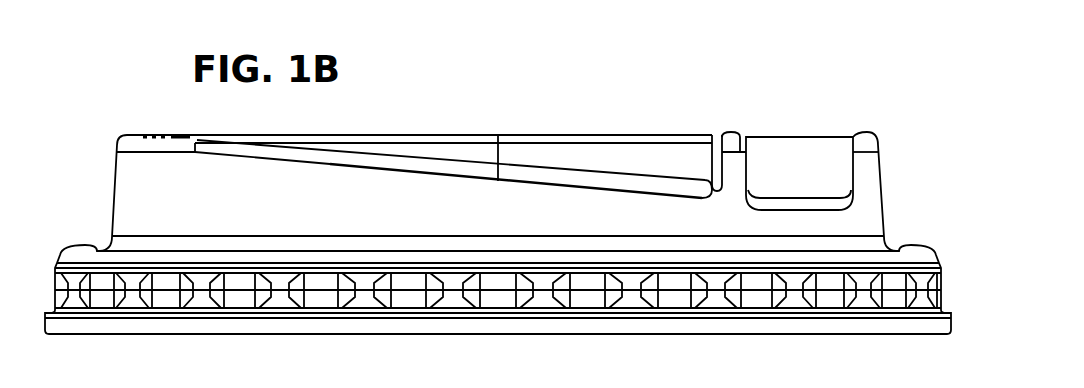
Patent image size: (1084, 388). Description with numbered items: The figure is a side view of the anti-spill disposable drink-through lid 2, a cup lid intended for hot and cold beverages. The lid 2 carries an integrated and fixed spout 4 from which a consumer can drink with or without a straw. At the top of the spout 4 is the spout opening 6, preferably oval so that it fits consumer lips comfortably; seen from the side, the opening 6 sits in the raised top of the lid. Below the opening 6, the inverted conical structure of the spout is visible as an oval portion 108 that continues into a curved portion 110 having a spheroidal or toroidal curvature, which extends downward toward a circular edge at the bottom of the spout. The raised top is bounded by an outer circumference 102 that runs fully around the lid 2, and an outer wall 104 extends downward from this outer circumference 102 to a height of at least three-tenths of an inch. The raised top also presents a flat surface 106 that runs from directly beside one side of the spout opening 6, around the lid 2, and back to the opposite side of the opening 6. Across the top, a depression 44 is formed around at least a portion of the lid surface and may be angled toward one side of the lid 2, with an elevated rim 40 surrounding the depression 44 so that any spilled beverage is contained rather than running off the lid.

The anti-spill disposable drink-through lid 2 is at (891, 51).
The integrated spout 4 is at (905, 180).
The spout opening 6 is at (745, 140).
The elevated rim 40 is at (713, 150).
The depression 44 is at (410, 173).
The outer circumference 102 is at (135, 134).
The outer wall 104 is at (132, 198).
The flat surface 106 is at (570, 134).
The oval portion 108 is at (853, 163).
The curved portion with spheroidal or toroidal curvature 110 is at (845, 205).